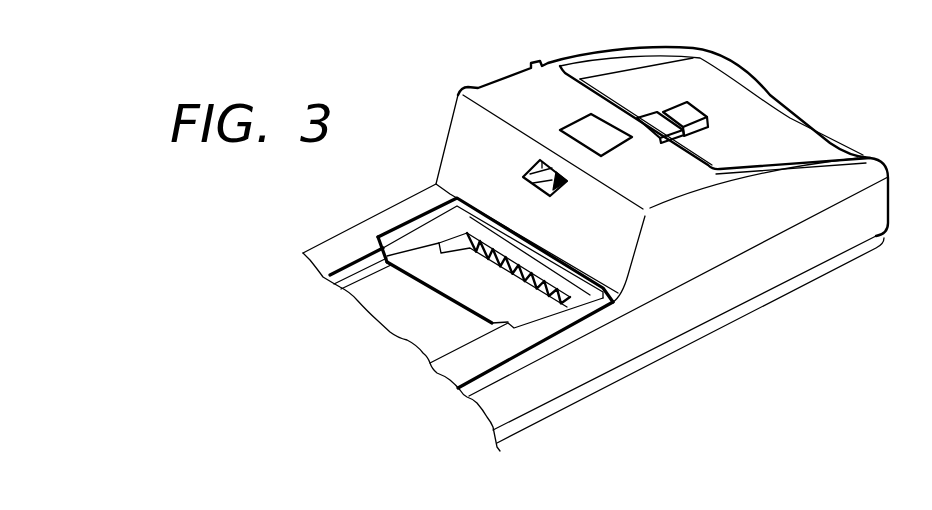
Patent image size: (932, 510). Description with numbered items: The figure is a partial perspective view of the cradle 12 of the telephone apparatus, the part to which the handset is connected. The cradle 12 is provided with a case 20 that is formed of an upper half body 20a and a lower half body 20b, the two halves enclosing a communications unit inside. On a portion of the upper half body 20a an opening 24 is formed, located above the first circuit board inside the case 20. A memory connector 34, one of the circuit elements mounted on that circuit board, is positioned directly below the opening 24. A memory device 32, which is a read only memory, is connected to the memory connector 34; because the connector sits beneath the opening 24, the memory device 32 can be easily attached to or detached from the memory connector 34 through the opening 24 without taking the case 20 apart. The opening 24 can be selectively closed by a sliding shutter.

The cradle 12 is at (452, 86).
The case 20 is at (712, 403).
The upper half body 20a is at (590, 322).
The lower half body 20b is at (670, 353).
The opening 24 is at (437, 264).
The memory device 32 is at (407, 225).
The memory connector 34 is at (466, 240).